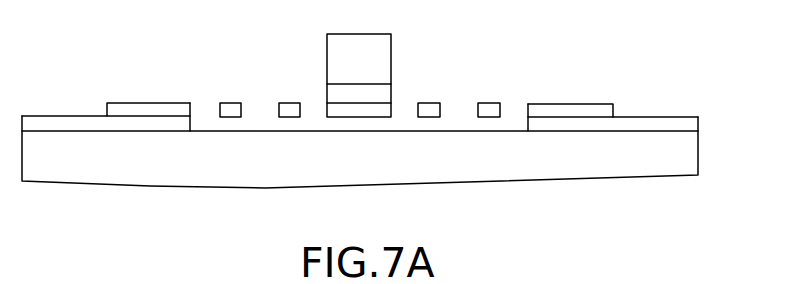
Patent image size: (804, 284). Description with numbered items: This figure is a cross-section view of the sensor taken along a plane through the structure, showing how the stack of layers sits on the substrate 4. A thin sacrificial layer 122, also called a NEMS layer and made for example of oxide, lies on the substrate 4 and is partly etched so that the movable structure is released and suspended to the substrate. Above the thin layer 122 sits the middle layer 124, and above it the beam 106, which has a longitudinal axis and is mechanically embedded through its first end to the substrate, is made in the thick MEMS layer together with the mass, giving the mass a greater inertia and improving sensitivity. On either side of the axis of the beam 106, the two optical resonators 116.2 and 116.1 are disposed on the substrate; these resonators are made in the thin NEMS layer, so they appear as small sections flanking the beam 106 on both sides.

The substrate 4 is at (688, 153).
The sacrificial layer 122 is at (688, 124).
The beam 106 is at (334, 53).
The middle layer 124 is at (334, 94).
The optical resonator 116.2 is at (291, 110).
The optical resonator 116.1 is at (490, 110).